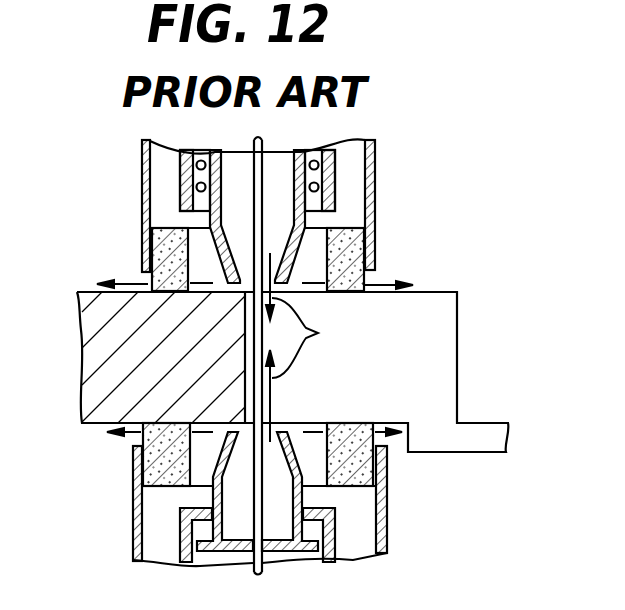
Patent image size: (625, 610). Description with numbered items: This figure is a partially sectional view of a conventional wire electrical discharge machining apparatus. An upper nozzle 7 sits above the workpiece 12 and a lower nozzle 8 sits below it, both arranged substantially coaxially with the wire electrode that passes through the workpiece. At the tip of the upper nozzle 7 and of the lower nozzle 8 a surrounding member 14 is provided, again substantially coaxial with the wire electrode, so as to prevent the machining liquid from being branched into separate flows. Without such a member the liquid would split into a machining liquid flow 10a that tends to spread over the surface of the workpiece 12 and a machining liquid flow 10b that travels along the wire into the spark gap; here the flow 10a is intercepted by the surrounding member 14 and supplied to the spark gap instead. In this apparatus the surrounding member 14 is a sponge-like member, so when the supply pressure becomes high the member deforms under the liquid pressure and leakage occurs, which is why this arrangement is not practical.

The upper nozzle 7 is at (212, 218).
The lower nozzle 8 is at (208, 500).
The machining liquid flow 10a is at (144, 283).
The machining liquid flow 10b is at (317, 347).
The workpiece 12 is at (433, 333).
The surrounding member 14 is at (340, 232).